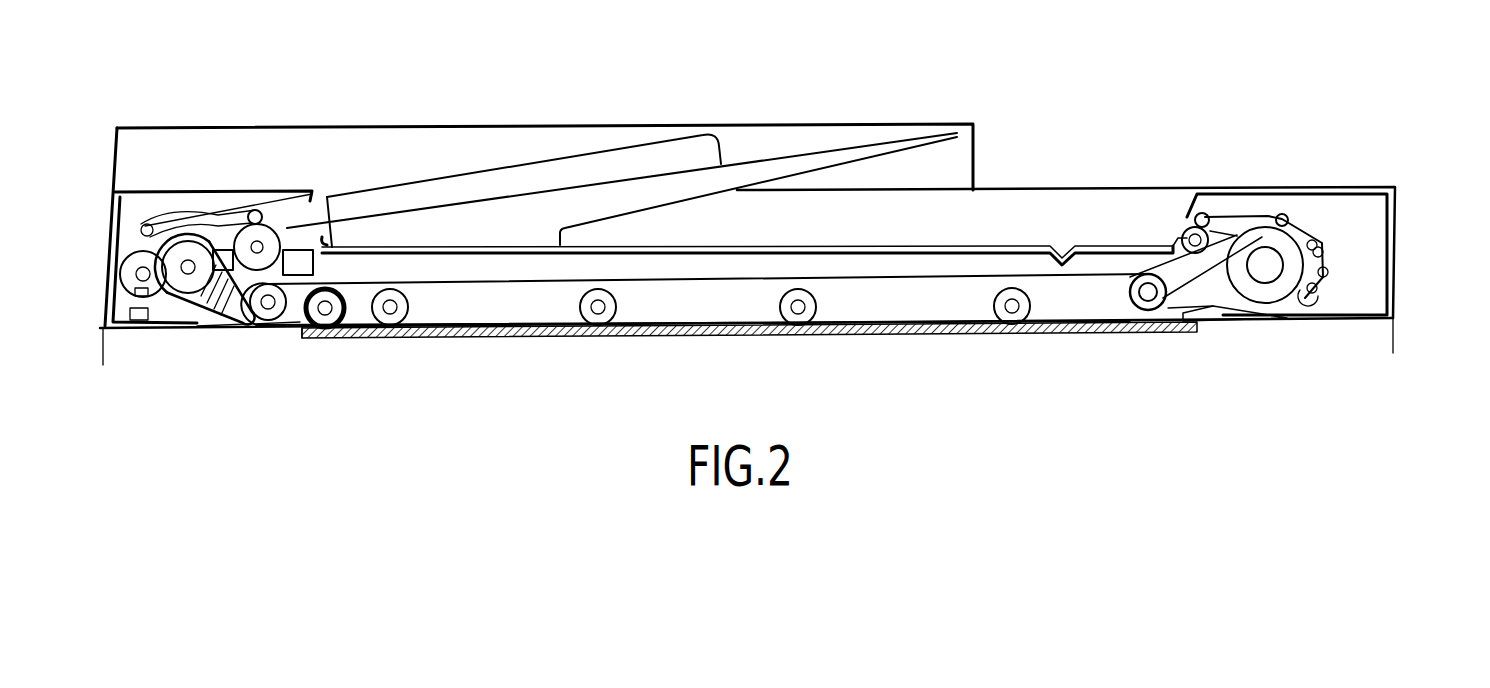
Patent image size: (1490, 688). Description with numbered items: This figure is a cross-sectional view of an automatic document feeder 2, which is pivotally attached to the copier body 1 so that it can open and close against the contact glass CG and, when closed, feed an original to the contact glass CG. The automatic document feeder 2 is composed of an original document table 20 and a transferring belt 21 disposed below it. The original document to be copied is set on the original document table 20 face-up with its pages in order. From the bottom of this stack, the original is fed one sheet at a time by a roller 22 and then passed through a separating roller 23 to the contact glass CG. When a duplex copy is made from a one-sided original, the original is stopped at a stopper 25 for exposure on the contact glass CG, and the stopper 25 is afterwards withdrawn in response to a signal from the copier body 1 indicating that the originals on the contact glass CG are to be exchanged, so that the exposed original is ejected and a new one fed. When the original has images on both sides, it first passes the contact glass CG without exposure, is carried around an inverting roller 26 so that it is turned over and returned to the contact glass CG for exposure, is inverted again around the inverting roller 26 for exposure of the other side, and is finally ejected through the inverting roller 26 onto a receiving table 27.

The copier body 1 is at (1413, 349).
The automatic document feeder 2 is at (1086, 134).
The original document table 20 is at (668, 157).
The transferring belt 21 is at (648, 283).
The roller 22 is at (237, 243).
The separating roller 23 is at (188, 272).
The stopper 25 is at (1213, 325).
The inverting roller 26 is at (1274, 272).
The receiving table 27 is at (935, 244).
The contact glass CG is at (835, 329).